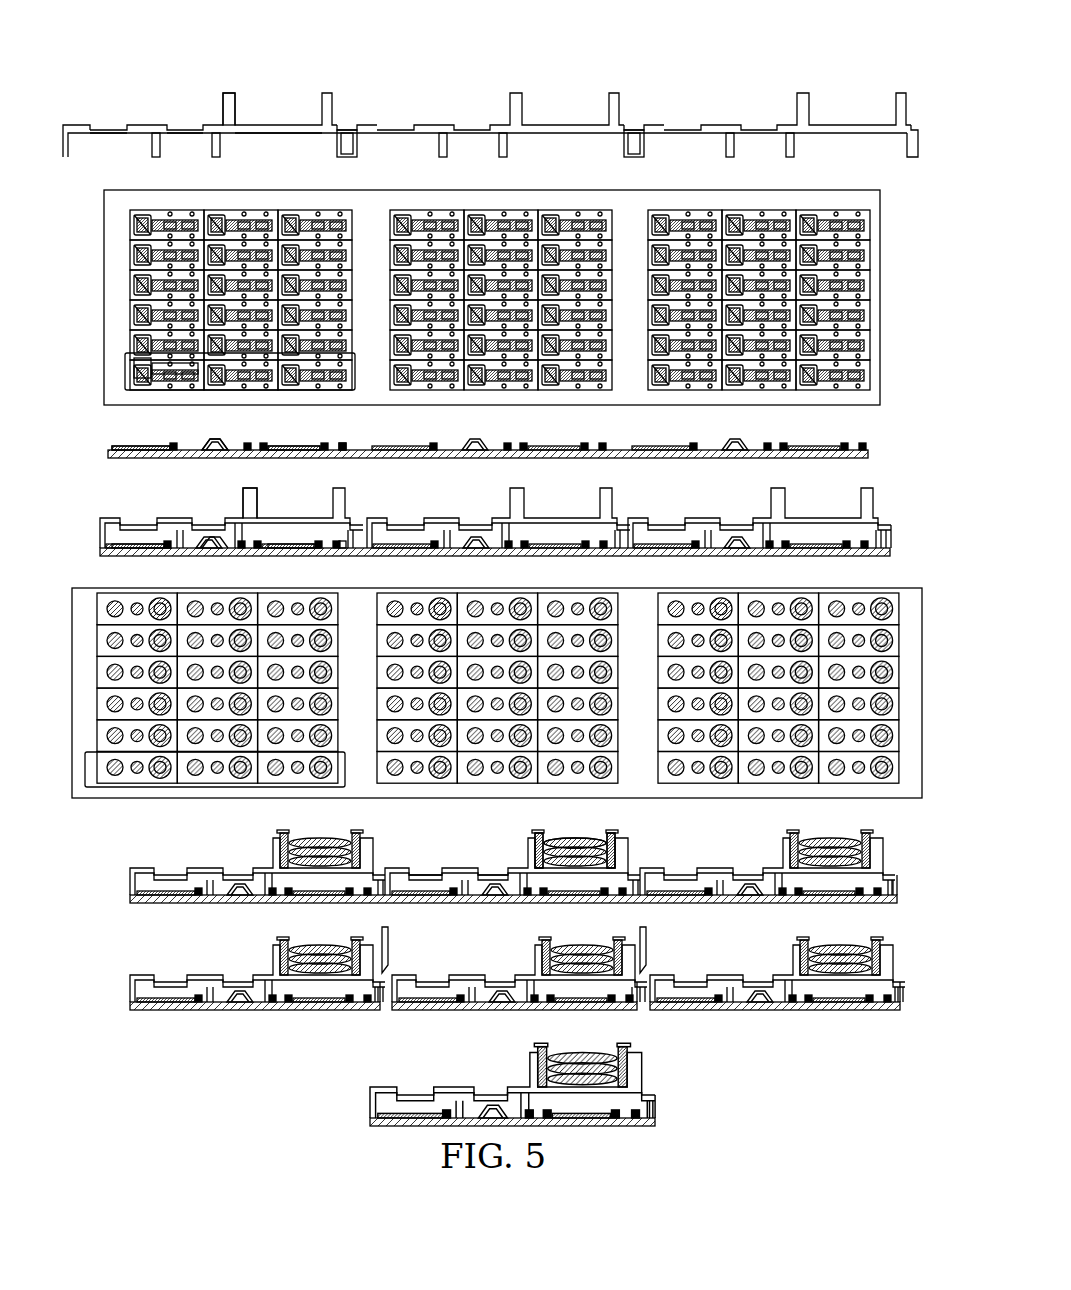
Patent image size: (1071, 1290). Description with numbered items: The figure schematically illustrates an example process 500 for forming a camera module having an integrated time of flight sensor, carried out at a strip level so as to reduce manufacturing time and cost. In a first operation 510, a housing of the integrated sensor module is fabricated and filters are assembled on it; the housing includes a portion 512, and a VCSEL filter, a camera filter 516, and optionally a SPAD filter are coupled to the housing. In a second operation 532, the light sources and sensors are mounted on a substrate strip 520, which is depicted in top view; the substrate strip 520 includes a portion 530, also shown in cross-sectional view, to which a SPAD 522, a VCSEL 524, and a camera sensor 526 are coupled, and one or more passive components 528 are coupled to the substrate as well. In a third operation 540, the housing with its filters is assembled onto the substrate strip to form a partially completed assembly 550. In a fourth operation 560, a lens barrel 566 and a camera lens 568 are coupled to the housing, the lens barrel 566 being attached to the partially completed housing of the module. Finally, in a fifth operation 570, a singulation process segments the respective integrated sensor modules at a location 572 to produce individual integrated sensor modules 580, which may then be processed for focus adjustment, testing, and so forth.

The process 500 is at (834, 46).
The first operation 510 is at (867, 87).
The portion 512 is at (222, 112).
The camera filter 516 is at (283, 140).
The substrate strip 520 is at (864, 201).
The SPAD 522 is at (128, 383).
The VCSEL 524 is at (158, 379).
The camera sensor 526 is at (293, 452).
The passive components 528 is at (346, 455).
The portion 530 is at (125, 372).
The second operation 532 is at (864, 436).
The third operation 540 is at (870, 502).
The partially completed assembly 550 is at (872, 577).
The fourth operation 560 is at (85, 767).
The lens barrel 566 is at (542, 834).
The camera lens 568 is at (582, 838).
The fifth operation 570 is at (884, 946).
The location 572 is at (390, 940).
The individual integrated sensor modules 580 is at (657, 1063).